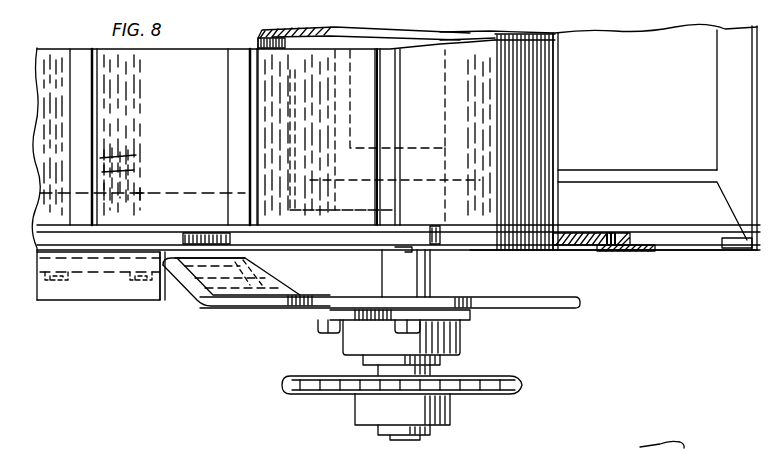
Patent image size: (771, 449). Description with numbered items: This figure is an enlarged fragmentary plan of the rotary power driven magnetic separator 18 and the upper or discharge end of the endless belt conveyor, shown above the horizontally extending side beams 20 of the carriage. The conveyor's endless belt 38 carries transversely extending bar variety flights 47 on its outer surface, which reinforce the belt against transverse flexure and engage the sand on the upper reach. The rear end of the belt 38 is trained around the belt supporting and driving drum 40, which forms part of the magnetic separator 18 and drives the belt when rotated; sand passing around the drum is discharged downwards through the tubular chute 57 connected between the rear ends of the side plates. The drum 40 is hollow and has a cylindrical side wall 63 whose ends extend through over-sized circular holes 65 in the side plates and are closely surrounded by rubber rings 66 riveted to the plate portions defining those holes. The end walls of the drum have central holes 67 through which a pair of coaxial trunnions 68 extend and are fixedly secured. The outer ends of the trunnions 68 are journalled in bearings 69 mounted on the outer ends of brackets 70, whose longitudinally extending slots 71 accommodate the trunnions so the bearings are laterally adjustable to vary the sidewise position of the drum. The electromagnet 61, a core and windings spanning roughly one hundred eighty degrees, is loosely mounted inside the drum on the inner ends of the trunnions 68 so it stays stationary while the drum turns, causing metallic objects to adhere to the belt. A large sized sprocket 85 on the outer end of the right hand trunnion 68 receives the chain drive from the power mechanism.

The magnetic separator 18 is at (326, 188).
The side beams 20 is at (80, 302).
The endless belt 38 is at (396, 174).
The belt supporting and driving drum 40 is at (256, 36).
The flights 47 is at (90, 160).
The tubular chute 57 is at (717, 133).
The electromagnet 61 is at (292, 200).
The cylindrical side wall 63 is at (560, 38).
The over-sized circular holes 65 is at (590, 250).
The rubber rings 66 is at (590, 233).
The holes 67 is at (428, 239).
The trunnions 68 is at (385, 278).
The bearings 69 is at (462, 340).
The brackets 70 is at (222, 310).
The longitudinally extending slots 71 is at (445, 300).
The large sized sprocket 85 is at (522, 385).